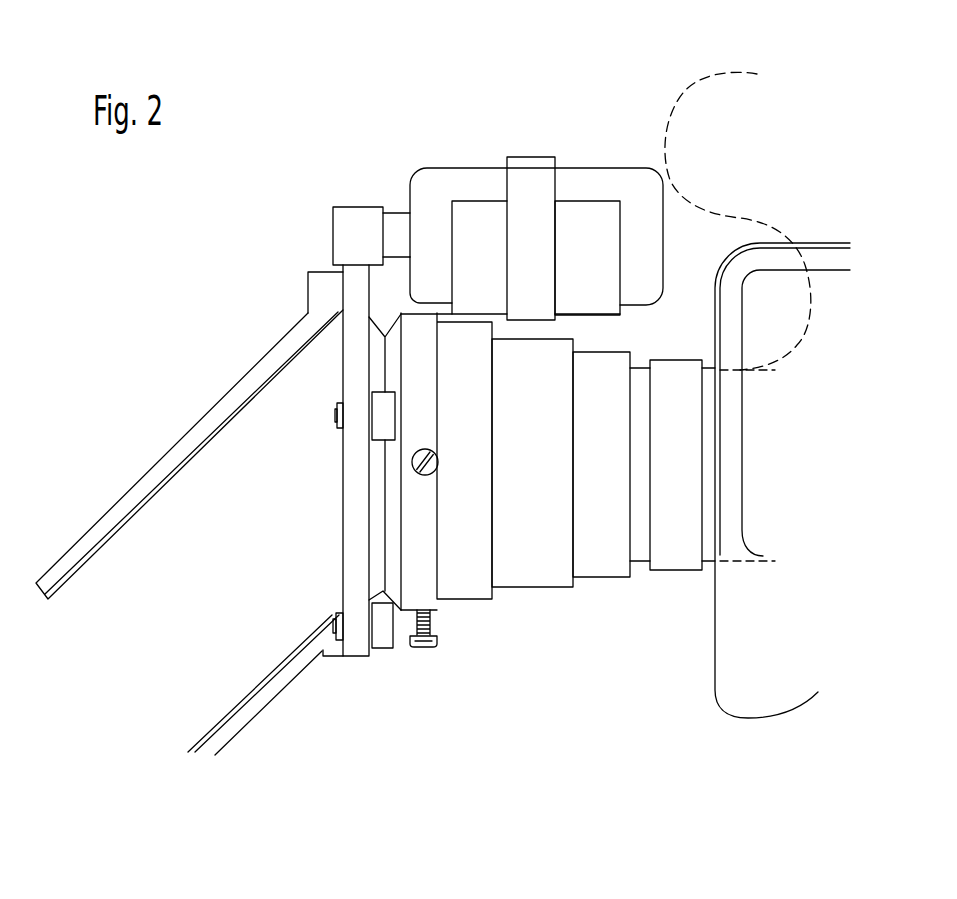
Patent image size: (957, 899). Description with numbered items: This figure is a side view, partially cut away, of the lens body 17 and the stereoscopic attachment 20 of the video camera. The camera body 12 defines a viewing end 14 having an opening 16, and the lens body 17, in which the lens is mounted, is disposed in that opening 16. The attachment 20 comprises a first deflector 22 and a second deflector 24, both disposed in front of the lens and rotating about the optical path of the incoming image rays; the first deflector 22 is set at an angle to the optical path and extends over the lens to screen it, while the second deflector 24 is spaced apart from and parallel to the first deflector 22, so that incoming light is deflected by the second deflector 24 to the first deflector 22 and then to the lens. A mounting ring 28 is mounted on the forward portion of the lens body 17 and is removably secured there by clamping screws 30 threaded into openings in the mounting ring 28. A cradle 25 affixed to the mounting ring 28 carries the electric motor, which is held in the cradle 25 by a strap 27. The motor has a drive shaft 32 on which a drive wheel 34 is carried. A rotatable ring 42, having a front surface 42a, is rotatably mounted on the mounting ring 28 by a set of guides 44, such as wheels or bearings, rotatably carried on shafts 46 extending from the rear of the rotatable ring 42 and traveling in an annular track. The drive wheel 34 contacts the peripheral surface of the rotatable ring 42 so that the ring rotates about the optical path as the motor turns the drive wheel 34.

The camera body 12 is at (817, 243).
The viewing end 14 is at (717, 316).
The opening 16 is at (738, 216).
The lens body 17 is at (545, 476).
The attachment 20 is at (298, 282).
The first deflector 22 is at (198, 420).
The second deflector 24 is at (231, 710).
The cradle 25 is at (588, 236).
The strap 27 is at (543, 165).
The mounting ring 28 is at (427, 593).
The clamping screws 30 is at (432, 477).
The drive shaft 32 is at (394, 222).
The drive wheel 34 is at (346, 233).
The rotatable ring 42 is at (353, 537).
The front surface 42a is at (369, 543).
The guides 44 is at (383, 453).
The shafts 46 is at (373, 418).